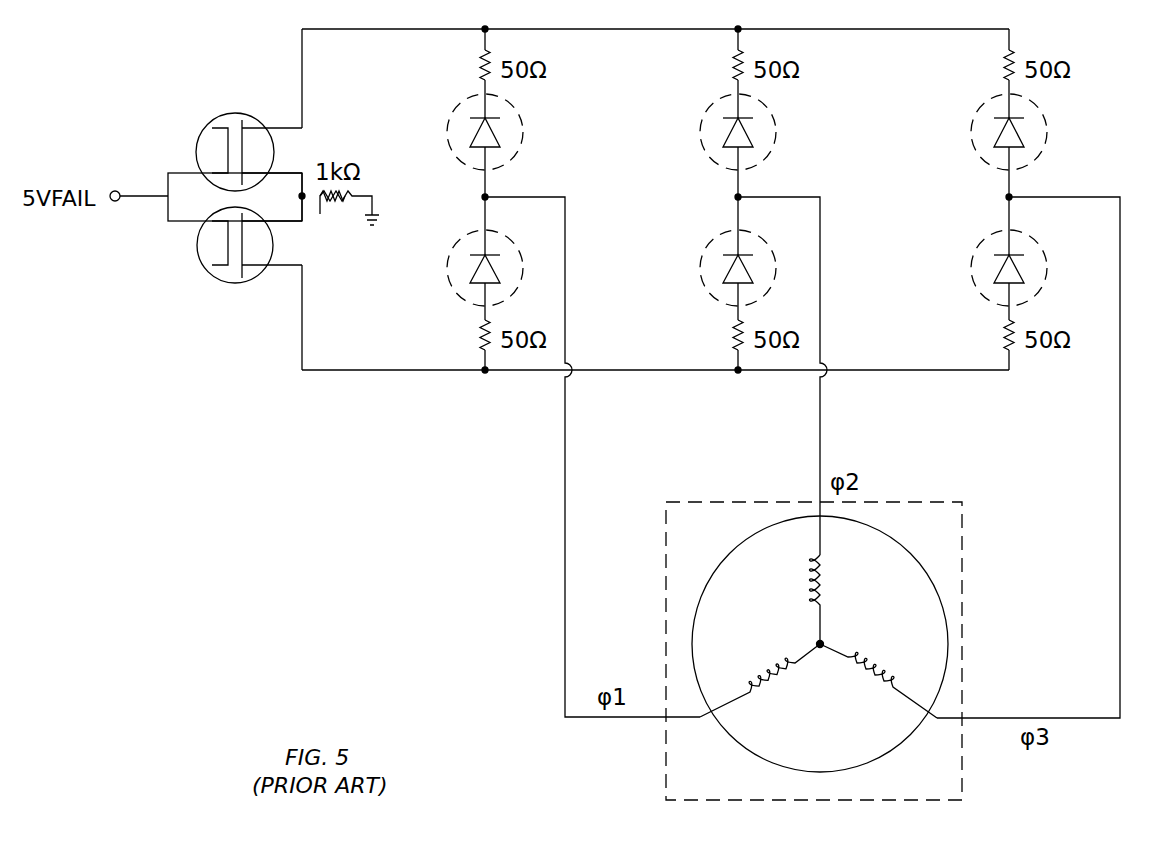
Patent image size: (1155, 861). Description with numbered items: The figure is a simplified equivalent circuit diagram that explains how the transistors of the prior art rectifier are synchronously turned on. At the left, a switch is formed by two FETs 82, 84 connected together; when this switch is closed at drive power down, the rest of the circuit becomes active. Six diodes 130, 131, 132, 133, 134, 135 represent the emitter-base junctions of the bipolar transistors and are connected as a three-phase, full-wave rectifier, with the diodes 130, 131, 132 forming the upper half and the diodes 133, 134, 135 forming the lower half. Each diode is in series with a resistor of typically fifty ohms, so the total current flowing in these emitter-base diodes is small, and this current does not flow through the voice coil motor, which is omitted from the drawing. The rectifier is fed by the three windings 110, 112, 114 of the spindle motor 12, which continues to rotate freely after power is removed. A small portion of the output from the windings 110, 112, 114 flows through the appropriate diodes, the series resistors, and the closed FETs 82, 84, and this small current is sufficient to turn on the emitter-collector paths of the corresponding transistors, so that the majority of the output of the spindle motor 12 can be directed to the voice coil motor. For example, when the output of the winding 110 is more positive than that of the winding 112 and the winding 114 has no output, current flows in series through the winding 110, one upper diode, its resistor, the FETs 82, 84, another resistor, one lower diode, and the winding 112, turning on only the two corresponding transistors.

The FET 82 is at (254, 113).
The FET 84 is at (236, 283).
The diode 130 is at (462, 103).
The diode 131 is at (715, 103).
The diode 132 is at (986, 103).
The diode 133 is at (452, 284).
The diode 134 is at (705, 284).
The diode 135 is at (976, 284).
The winding 110 is at (782, 686).
The winding 112 is at (823, 582).
The winding 114 is at (878, 662).
The spindle motor 12 is at (962, 772).